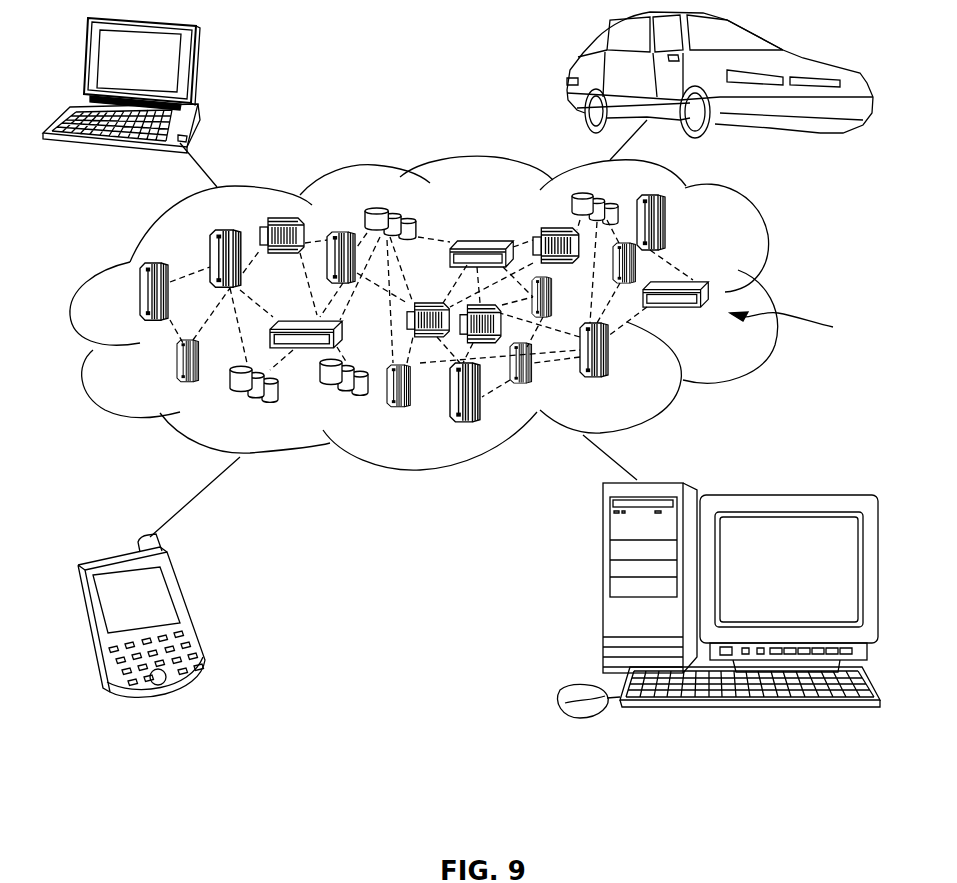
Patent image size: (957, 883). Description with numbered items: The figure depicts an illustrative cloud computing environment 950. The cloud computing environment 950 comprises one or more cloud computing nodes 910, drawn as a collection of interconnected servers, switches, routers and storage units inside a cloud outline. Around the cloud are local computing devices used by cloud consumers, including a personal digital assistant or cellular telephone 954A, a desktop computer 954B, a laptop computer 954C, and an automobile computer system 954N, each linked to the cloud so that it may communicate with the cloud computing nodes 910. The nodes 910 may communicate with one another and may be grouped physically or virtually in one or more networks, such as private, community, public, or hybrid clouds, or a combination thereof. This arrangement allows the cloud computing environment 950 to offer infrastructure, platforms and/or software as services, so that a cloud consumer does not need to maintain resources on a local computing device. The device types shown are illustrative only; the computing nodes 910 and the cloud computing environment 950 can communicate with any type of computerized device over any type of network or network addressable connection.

The cloud computing environment 950 is at (750, 255).
The cloud computing nodes 910 is at (808, 336).
The personal digital assistant or cellular telephone 954A is at (190, 610).
The desktop computer 954B is at (603, 590).
The laptop computer 954C is at (197, 62).
The automobile computer system 954N is at (578, 67).